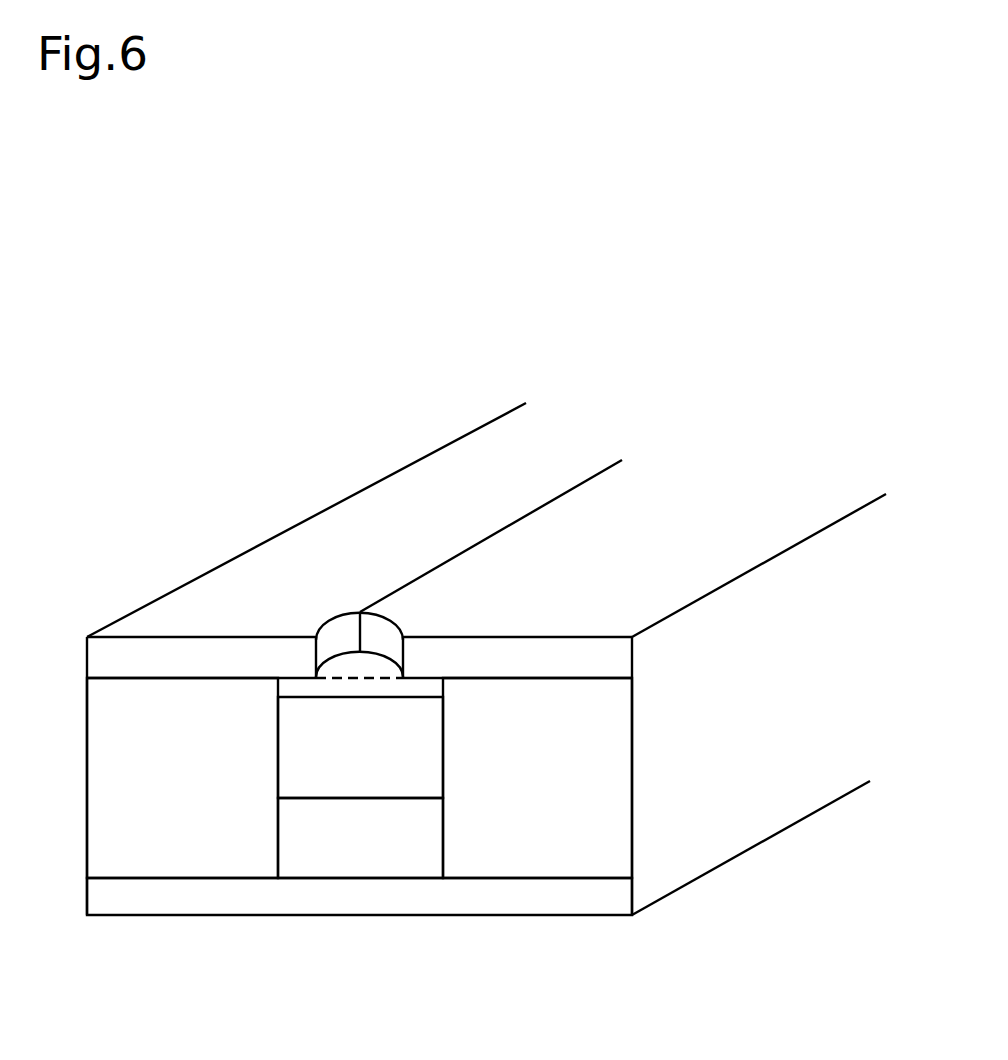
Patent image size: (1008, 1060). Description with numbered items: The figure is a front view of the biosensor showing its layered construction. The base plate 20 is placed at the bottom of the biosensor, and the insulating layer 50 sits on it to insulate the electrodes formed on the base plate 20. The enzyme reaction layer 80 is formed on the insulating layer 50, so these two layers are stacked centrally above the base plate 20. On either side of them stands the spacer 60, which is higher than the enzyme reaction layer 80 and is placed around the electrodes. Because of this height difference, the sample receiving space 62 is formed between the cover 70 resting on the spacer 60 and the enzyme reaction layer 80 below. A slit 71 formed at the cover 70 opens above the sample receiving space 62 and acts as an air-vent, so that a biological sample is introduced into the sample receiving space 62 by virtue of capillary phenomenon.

The base plate 20 is at (359, 896).
The insulating layer 50 is at (360, 838).
The spacer 60 is at (359, 778).
The sample receiving space 62 is at (360, 692).
The cover 70 is at (359, 657).
The slit 71 is at (567, 492).
The enzyme reaction layer 80 is at (360, 747).